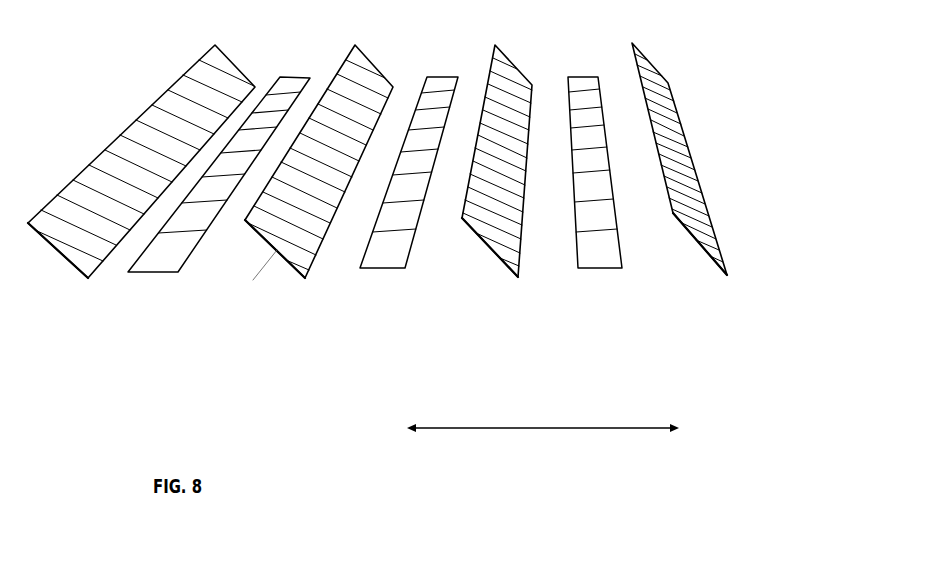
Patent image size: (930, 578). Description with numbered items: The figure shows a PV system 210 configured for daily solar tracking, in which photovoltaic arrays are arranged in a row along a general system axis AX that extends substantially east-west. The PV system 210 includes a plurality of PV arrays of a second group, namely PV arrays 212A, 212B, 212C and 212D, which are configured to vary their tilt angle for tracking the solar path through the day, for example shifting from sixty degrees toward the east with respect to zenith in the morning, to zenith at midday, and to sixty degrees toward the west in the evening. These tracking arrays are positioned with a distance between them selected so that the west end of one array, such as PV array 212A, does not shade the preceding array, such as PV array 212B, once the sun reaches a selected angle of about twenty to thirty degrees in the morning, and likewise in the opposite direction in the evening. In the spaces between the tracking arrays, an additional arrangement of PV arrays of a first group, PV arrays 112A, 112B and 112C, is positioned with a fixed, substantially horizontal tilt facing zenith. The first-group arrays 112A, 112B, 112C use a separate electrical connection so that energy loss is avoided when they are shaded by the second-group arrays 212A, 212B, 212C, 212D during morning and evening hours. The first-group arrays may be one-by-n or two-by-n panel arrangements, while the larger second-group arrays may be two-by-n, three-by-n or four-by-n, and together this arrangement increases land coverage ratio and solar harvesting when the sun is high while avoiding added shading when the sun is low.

The PV system 210 is at (133, 70).
The PV array of the second group 212A is at (90, 257).
The PV array of the first group 112A is at (163, 236).
The PV array of the second group 212B is at (275, 250).
The PV array of the first group 112B is at (405, 255).
The PV array of the second group 212C is at (490, 250).
The PV array of the first group 112C is at (617, 253).
The PV array of the second group 212D is at (717, 252).
The general system axis AX is at (542, 442).